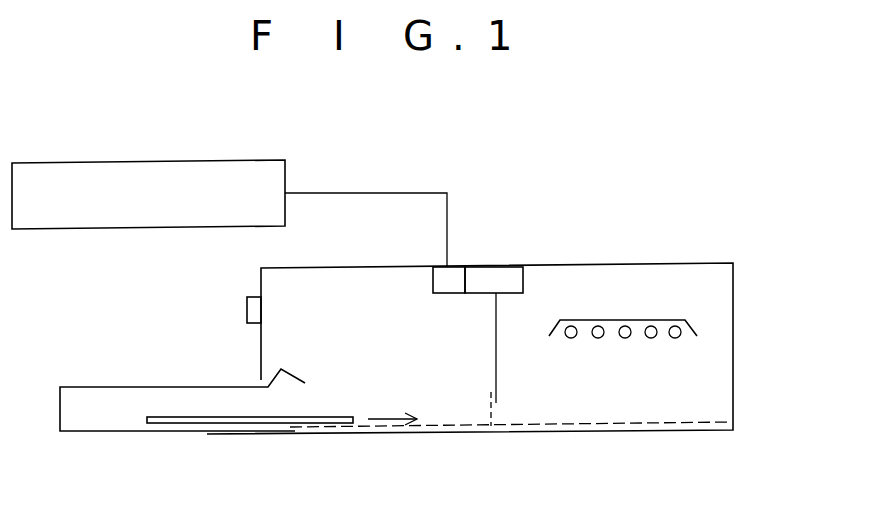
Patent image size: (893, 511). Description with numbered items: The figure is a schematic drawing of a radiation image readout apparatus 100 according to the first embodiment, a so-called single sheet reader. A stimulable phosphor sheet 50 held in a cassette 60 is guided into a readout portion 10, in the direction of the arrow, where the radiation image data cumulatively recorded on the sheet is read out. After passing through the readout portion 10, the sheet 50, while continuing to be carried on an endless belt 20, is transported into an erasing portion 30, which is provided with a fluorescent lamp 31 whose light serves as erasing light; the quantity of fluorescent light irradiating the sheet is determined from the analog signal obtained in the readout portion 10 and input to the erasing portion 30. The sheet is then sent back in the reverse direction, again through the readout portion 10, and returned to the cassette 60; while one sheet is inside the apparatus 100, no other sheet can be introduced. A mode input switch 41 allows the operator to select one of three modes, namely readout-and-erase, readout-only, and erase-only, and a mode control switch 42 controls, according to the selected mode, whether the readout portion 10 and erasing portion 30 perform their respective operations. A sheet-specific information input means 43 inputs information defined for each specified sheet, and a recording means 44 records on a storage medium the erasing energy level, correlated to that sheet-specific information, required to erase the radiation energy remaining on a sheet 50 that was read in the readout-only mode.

The radiation image readout apparatus 100 is at (524, 236).
The readout portion 10 is at (378, 283).
The endless belt 20 is at (618, 420).
The erasing portion 30 is at (670, 272).
The fluorescent lamp 31 is at (631, 331).
The mode input switch 41 is at (247, 303).
The mode control switch 42 is at (494, 346).
The sheet-specific information input means 43 is at (247, 162).
The recording means 44 is at (449, 280).
The stimulable phosphor sheet 50 is at (302, 414).
The cassette 60 is at (92, 387).